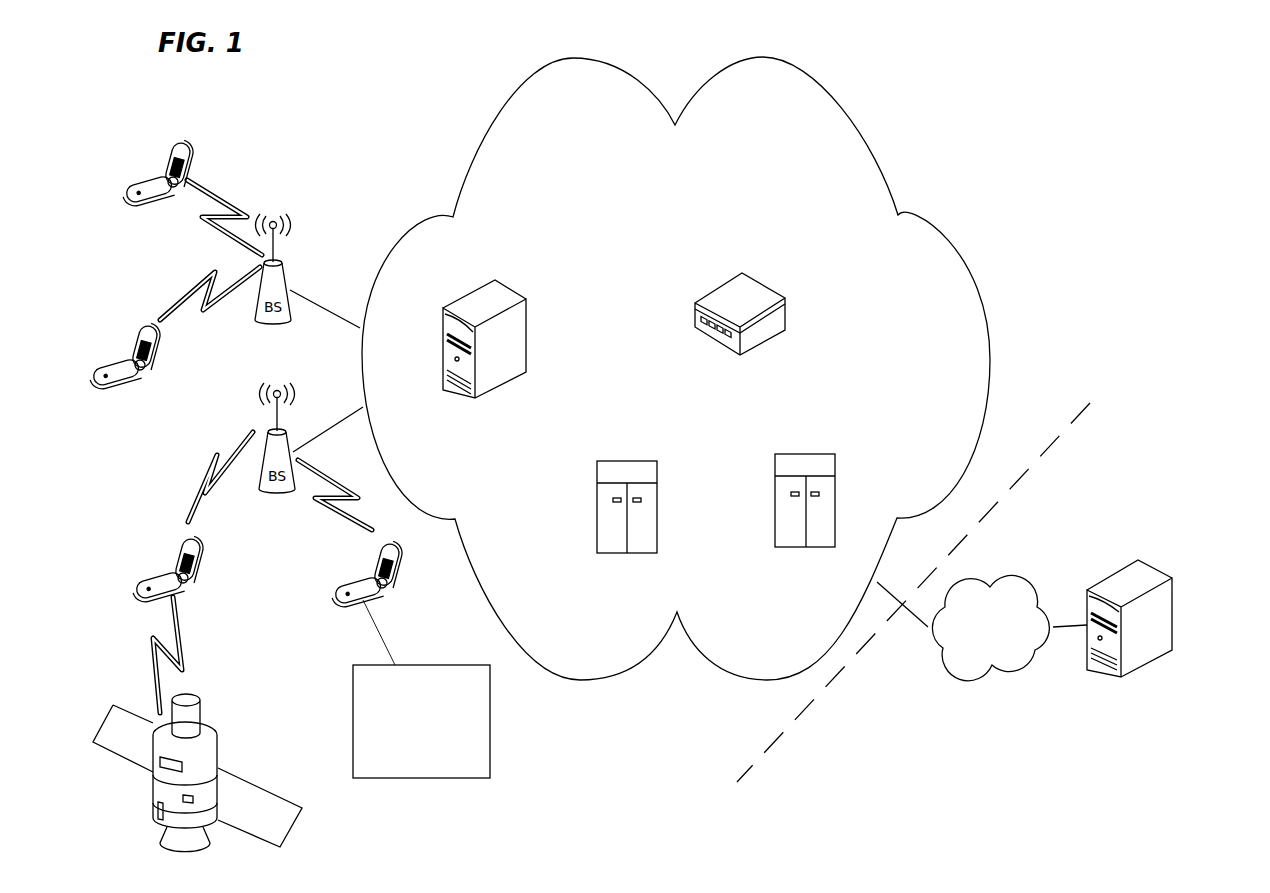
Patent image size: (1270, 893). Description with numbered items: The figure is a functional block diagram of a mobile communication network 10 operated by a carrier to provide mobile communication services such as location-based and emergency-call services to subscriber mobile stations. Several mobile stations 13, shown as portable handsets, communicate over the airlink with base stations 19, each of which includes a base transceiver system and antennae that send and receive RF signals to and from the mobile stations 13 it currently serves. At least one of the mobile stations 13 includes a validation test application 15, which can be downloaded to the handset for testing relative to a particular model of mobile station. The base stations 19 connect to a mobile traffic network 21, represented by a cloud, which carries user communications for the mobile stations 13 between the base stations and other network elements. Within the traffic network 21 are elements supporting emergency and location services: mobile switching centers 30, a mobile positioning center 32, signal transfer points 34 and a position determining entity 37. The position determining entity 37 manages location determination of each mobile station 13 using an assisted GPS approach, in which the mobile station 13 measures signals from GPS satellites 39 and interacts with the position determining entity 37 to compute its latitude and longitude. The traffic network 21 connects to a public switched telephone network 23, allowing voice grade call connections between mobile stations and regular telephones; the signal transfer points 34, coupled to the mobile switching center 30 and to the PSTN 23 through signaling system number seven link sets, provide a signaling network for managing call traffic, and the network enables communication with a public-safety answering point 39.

The mobile communication network 10 is at (346, 79).
The mobile station 13 is at (192, 157).
The validation test application 15 is at (485, 713).
The base station 19 is at (282, 262).
The mobile traffic network 21 is at (676, 368).
The public switched telephone network 23 is at (972, 677).
The mobile switching center 30 is at (507, 378).
The mobile positioning center 32 is at (722, 288).
The signal transfer point 34 is at (776, 486).
The position determining entity 37 is at (597, 494).
The public-safety answering point / GPS satellite 39 is at (1172, 625).